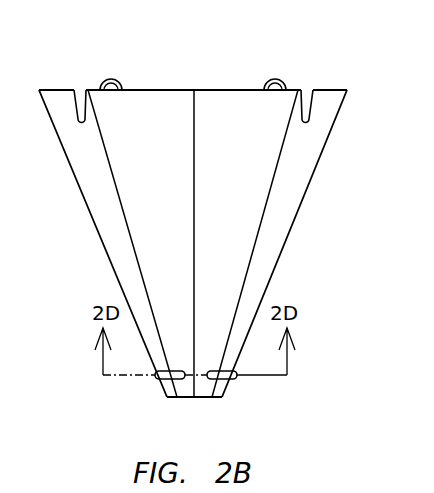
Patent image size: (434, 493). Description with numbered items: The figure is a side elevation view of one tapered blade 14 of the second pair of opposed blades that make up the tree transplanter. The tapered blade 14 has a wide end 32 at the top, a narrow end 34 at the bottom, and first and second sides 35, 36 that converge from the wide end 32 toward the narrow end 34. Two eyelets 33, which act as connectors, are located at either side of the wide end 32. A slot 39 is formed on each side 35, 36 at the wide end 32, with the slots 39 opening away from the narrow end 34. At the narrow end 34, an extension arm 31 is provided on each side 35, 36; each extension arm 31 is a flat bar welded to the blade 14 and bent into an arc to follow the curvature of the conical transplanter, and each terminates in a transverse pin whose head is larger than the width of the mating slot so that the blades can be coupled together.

The tapered blade 14 is at (279, 236).
The extension arm 31 is at (158, 380).
The wide end 32 is at (158, 105).
The eyelet 33 is at (123, 73).
The narrow end 34 is at (202, 392).
The first side 35 is at (98, 188).
The second side 36 is at (305, 165).
The slot 39 is at (72, 91).